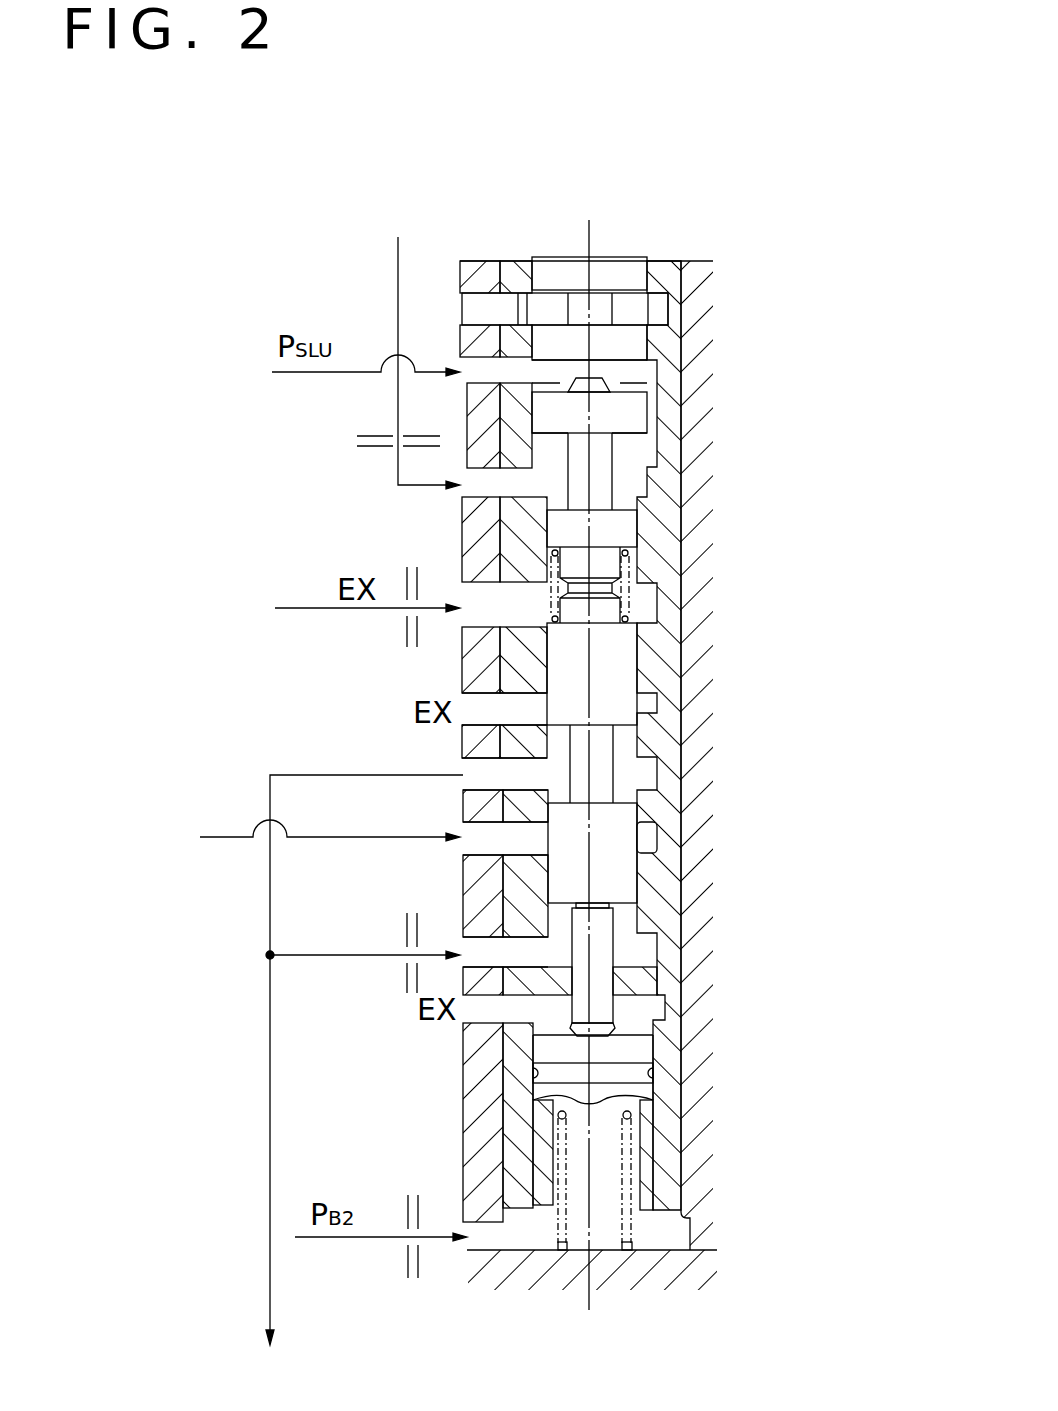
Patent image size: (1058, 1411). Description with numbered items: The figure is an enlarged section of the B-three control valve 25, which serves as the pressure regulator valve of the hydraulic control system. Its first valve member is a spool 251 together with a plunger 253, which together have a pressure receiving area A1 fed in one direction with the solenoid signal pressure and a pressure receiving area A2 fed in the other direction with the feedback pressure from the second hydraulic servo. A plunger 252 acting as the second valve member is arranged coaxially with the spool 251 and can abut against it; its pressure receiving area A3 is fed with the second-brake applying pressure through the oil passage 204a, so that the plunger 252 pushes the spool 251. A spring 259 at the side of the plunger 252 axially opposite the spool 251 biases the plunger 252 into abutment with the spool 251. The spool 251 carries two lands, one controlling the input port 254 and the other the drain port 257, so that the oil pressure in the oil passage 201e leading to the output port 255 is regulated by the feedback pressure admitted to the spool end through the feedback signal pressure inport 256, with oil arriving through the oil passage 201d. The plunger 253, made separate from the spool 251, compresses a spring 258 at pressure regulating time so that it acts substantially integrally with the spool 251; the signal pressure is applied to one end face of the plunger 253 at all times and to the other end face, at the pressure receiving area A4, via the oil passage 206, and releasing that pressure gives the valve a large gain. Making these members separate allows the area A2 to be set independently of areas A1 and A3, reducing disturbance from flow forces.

The B-3 control valve 25 is at (681, 246).
The oil passage 206 is at (398, 290).
The spool 251 is at (620, 840).
The plunger 252 is at (643, 1047).
The plunger 253 is at (620, 483).
The input port 254 is at (480, 840).
The output port 255 is at (480, 760).
The feedback signal pressure inport 256 is at (480, 947).
The drain port 257 is at (480, 690).
The spring 258 is at (630, 607).
The spring 259 is at (640, 1244).
The oil passage 201d is at (223, 837).
The oil passage 201e is at (310, 773).
The oil passage 204a is at (340, 1240).
The pressure receiving area A1 is at (650, 384).
The pressure receiving area A2 is at (628, 918).
The pressure receiving area A3 is at (612, 1108).
The pressure receiving area A4 is at (650, 456).